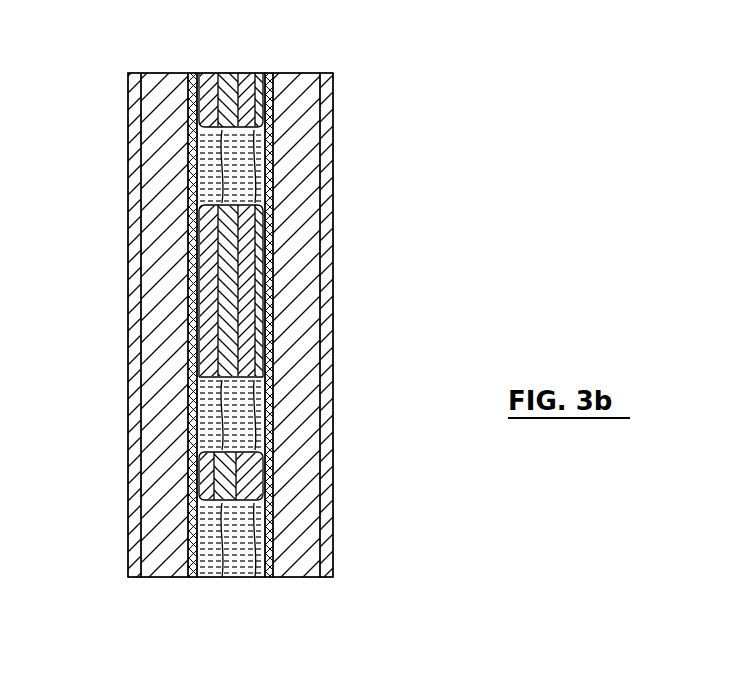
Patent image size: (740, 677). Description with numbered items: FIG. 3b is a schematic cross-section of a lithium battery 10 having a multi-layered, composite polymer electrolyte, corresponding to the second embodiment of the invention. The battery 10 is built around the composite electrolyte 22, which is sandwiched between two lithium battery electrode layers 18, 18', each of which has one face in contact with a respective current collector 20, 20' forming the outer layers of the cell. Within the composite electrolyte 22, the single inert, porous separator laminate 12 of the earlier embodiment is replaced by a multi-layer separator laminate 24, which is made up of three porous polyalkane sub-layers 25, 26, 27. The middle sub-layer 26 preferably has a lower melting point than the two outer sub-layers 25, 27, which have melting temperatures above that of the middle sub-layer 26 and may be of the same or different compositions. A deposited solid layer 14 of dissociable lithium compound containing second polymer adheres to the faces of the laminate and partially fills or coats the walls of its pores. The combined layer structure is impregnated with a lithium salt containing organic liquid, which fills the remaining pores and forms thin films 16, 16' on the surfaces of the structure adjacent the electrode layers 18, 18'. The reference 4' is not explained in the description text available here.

The battery 10 is at (371, 496).
The inert, porous separator laminate 12 is at (236, 578).
The deposited solid layer of dissociable lithium compound containing second polymer 14 is at (267, 127).
The thin film of lithium salt containing organic liquid 16 is at (282, 368).
The thin film of lithium salt containing organic liquid 16' is at (168, 356).
The lithium battery electrode layer 18 is at (301, 296).
The lithium battery electrode layer 18' is at (164, 296).
The current collector 20 is at (369, 306).
The current collector 20' is at (103, 296).
The composite electrolyte 22 is at (268, 63).
The multi-layer separator laminate 24 is at (245, 234).
The porous sub-layer 25 is at (205, 242).
The middle sub-layer 26 is at (225, 288).
The porous sub-layer 27 is at (245, 304).
The housing section 4' is at (179, 325).